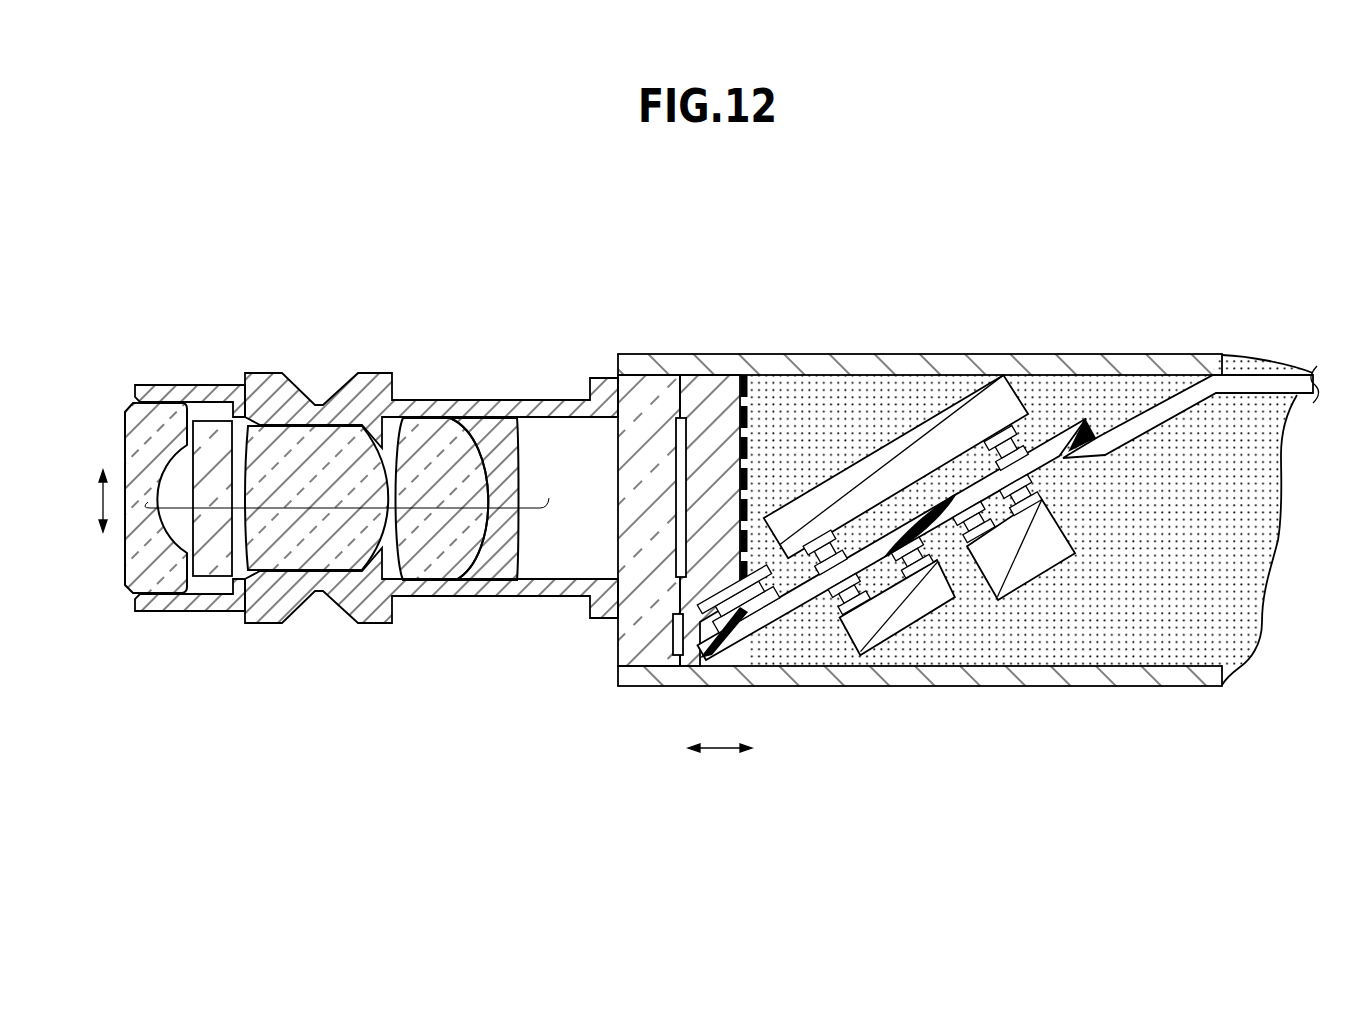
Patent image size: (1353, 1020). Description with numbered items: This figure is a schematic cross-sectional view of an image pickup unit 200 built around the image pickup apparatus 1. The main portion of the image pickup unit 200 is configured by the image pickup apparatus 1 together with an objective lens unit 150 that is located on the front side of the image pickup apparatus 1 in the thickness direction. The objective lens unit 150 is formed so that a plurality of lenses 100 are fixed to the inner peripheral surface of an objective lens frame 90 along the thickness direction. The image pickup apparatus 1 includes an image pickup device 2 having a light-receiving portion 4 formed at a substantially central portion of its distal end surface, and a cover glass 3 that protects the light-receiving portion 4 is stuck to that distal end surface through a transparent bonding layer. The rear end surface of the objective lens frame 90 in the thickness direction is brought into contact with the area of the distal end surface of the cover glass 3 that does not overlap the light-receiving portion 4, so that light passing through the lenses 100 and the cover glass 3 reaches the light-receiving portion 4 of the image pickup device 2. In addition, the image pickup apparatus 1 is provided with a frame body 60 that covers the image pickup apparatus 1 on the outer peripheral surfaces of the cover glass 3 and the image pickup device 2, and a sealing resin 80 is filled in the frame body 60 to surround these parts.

The image pickup unit 200 is at (850, 253).
The objective lens unit 150 is at (403, 360).
The image pickup apparatus 1 is at (838, 420).
The image pickup device 2 is at (690, 593).
The cover glass 3 is at (648, 652).
The light-receiving portion 4 is at (683, 418).
The frame body 60 is at (836, 678).
The sealing resin 80 is at (1125, 602).
The objective lens frame 90 is at (186, 613).
The lenses 100 is at (350, 506).